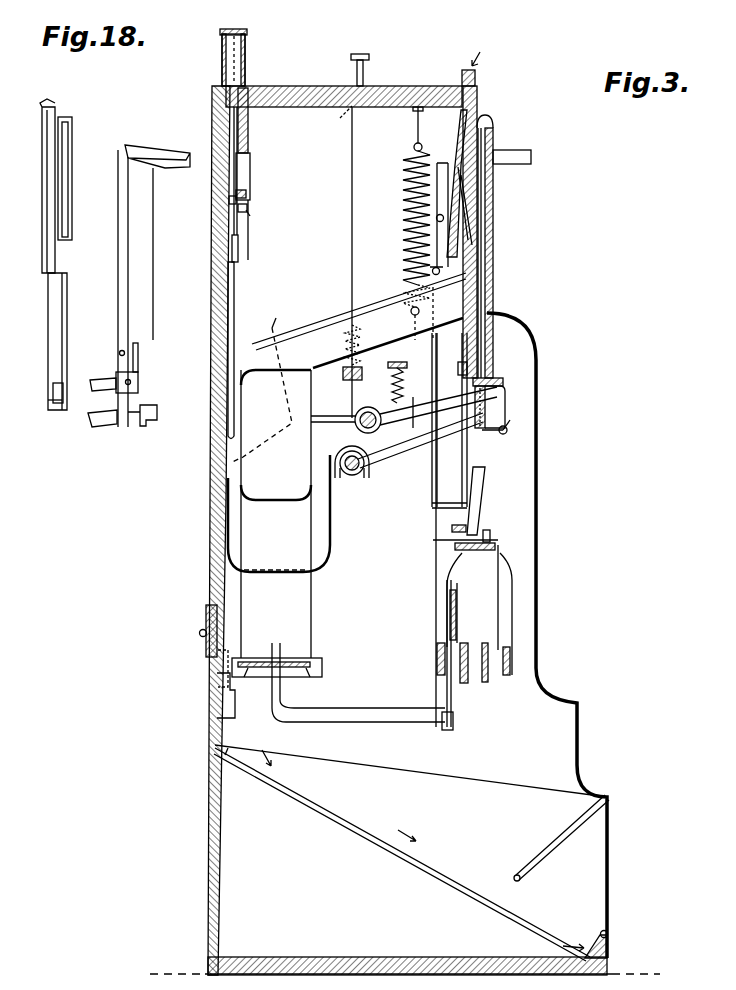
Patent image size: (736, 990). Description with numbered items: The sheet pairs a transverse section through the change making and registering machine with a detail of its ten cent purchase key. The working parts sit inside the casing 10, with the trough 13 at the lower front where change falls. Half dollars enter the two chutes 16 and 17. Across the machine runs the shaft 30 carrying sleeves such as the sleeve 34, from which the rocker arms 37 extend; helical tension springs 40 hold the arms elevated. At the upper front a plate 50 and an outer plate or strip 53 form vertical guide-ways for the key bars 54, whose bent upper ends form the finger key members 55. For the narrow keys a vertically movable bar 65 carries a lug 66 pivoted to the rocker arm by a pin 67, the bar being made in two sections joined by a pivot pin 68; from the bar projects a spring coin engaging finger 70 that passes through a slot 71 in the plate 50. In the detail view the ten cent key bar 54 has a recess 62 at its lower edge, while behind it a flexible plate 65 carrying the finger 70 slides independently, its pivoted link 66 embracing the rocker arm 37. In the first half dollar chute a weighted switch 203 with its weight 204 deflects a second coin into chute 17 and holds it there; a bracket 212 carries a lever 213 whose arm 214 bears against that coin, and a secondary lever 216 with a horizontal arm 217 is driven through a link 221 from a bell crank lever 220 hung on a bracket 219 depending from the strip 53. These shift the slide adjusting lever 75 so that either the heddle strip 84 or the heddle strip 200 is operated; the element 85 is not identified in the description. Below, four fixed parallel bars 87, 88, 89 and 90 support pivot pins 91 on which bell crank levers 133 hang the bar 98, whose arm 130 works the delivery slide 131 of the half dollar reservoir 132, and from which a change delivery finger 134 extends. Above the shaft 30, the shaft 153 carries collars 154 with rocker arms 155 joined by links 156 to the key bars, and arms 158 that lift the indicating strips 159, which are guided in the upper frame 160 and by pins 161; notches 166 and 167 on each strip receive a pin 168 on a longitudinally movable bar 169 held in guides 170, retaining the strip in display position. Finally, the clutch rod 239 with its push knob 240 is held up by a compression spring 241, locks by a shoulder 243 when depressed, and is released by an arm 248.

In FIG. 3, the casing 10 is at (277, 94).
In FIG. 3, the trough 13 is at (603, 934).
In FIG. 3, the chute 16 is at (476, 79).
In FIG. 3, the chute 17 is at (452, 160).
In FIG. 3, the shaft 30 is at (356, 472).
In FIG. 3, the sleeve 34 is at (371, 468).
In FIG. 18, the rocker arms 37 is at (100, 422).
In FIG. 3, the rocker arms 37 is at (404, 450).
In FIG. 3, the helical tension springs 40 is at (406, 185).
In FIG. 3, the plate 50 is at (480, 99).
In FIG. 3, the outer plate or strip 53 is at (518, 333).
In FIG. 18, the key bar 54 is at (148, 297).
In FIG. 3, the finger key member 55 is at (532, 157).
In FIG. 18, the recess 62 is at (132, 428).
In FIG. 18, the vertically movable bar 65 is at (60, 303).
In FIG. 3, the vertically movable bar 65 is at (483, 349).
In FIG. 18, the lug 66 is at (55, 410).
In FIG. 3, the lug 66 is at (486, 405).
In FIG. 3, the pin 67 is at (486, 417).
In FIG. 3, the pivot pin 68 is at (494, 379).
In FIG. 18, the spring coin engaging finger 70 is at (44, 136).
In FIG. 3, the spring coin engaging finger 70 is at (483, 236).
In FIG. 3, the slot 71 is at (494, 124).
In FIG. 3, the slide adjusting lever 75 is at (464, 453).
In FIG. 3, the heddle strip 84 is at (491, 535).
In FIG. 3, the plate 85 is at (496, 548).
In FIG. 3, the fixed parallel bar 87 is at (440, 678).
In FIG. 3, the fixed parallel bar 88 is at (466, 684).
In FIG. 3, the fixed parallel bar 89 is at (488, 684).
In FIG. 3, the fixed parallel bar 90 is at (512, 678).
In FIG. 3, the pivot pins 91 is at (469, 648).
In FIG. 3, the bar 98 is at (448, 727).
In FIG. 3, the rearwardly extending arm 130 is at (271, 645).
In FIG. 3, the delivery slide 131 is at (306, 660).
In FIG. 3, the half dollar reservoir 132 is at (300, 627).
In FIG. 3, the bell crank lever 133 is at (440, 718).
In FIG. 3, the change delivery finger 134 is at (455, 592).
In FIG. 3, the shaft 153 is at (381, 426).
In FIG. 3, the collar 154 is at (368, 407).
In FIG. 18, the rocker arm 155 is at (104, 384).
In FIG. 3, the rocker arm 155 is at (446, 400).
In FIG. 18, the link 156 is at (138, 378).
In FIG. 3, the arm 158 is at (335, 416).
In FIG. 3, the indicating strip 159 is at (221, 106).
In FIG. 3, the upper plate or frame 160 is at (240, 128).
In FIG. 3, the pins 161 is at (234, 300).
In FIG. 3, the upper notch 166 is at (234, 200).
In FIG. 3, the lower notch 167 is at (238, 248).
In FIG. 3, the pin 168 is at (247, 208).
In FIG. 3, the longitudinally movable bar 169 is at (248, 196).
In FIG. 3, the guides 170 is at (250, 216).
In FIG. 3, the heddle strip 200 is at (450, 531).
In FIG. 3, the weighted switch 203 is at (466, 205).
In FIG. 3, the weight 204 is at (469, 216).
In FIG. 3, the bracket 212 is at (412, 206).
In FIG. 3, the lever 213 is at (425, 248).
In FIG. 3, the arm 214 is at (412, 150).
In FIG. 3, the secondary lever 216 is at (433, 488).
In FIG. 3, the horizontally disposed arm 217 is at (478, 506).
In FIG. 3, the bracket 219 is at (504, 394).
In FIG. 3, the bell crank lever 220 is at (508, 424).
In FIG. 3, the link 221 is at (454, 424).
In FIG. 3, the rod 239 is at (352, 164).
In FIG. 3, the push knob 240 is at (362, 52).
In FIG. 3, the compression spring 241 is at (292, 384).
In FIG. 3, the shoulder 243 is at (329, 122).
In FIG. 3, the arm 248 is at (290, 317).